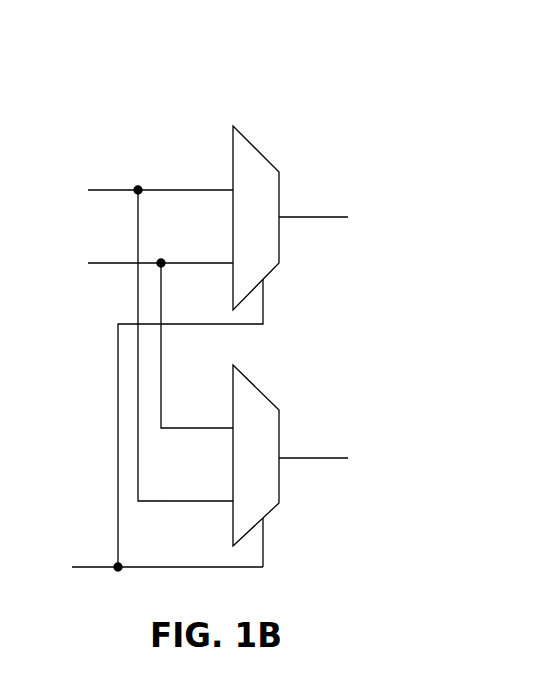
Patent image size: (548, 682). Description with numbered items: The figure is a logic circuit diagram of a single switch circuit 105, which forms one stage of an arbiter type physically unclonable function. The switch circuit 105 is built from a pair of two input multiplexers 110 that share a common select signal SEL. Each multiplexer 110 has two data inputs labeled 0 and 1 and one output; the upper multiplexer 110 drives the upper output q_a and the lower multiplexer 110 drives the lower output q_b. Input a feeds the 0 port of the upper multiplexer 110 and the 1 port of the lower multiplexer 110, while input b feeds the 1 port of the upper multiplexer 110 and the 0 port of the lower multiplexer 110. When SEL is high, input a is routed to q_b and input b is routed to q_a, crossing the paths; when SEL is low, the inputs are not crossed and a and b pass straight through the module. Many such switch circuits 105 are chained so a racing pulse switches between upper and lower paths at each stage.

The switch circuit 105 is at (455, 84).
The two input multiplexer 110 is at (279, 193).
The multiplexer input 0 is at (173, 313).
The multiplexer input 1 is at (174, 380).